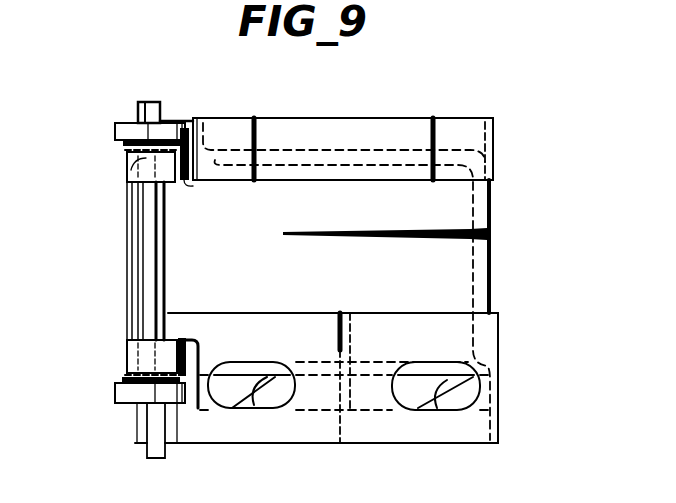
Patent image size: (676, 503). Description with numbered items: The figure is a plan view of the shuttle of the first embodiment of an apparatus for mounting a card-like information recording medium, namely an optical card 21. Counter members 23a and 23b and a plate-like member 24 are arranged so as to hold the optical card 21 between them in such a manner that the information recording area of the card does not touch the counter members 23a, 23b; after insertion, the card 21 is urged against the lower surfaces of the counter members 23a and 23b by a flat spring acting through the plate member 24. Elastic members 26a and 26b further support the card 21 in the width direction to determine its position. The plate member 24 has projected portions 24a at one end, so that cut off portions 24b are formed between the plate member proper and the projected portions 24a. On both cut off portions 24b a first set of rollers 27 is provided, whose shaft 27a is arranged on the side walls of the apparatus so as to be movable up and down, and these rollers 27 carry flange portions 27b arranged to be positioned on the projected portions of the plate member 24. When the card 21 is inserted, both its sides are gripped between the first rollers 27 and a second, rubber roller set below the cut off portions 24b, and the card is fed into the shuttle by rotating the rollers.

The optical card 21 is at (491, 205).
The counter member 23a is at (457, 118).
The counter member 23b is at (468, 432).
The plate-like member 24 is at (475, 266).
The projected portion 24a is at (187, 118).
The cut off portion 24b is at (182, 185).
The elastic member 26a is at (268, 397).
The elastic member 26b is at (447, 393).
The first set of rollers 27 is at (114, 133).
The shaft 27a is at (152, 102).
The flange portion 27b is at (118, 141).